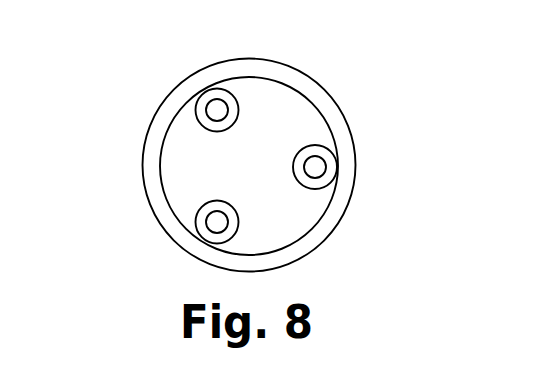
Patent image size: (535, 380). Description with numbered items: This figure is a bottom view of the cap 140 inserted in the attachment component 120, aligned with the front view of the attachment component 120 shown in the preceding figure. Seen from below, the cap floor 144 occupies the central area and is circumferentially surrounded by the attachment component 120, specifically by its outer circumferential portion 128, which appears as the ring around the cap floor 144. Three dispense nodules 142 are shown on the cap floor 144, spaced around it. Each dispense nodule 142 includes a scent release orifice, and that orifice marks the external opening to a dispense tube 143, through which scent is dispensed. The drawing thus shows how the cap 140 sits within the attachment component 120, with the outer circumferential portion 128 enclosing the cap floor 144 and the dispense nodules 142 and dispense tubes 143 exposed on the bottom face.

The attachment component 120 is at (157, 101).
The outer circumferential portion 128 is at (297, 82).
The cap 140 is at (171, 181).
The dispense nodule 142 is at (320, 147).
The dispense tube 143 is at (313, 165).
The cap floor 144 is at (265, 176).